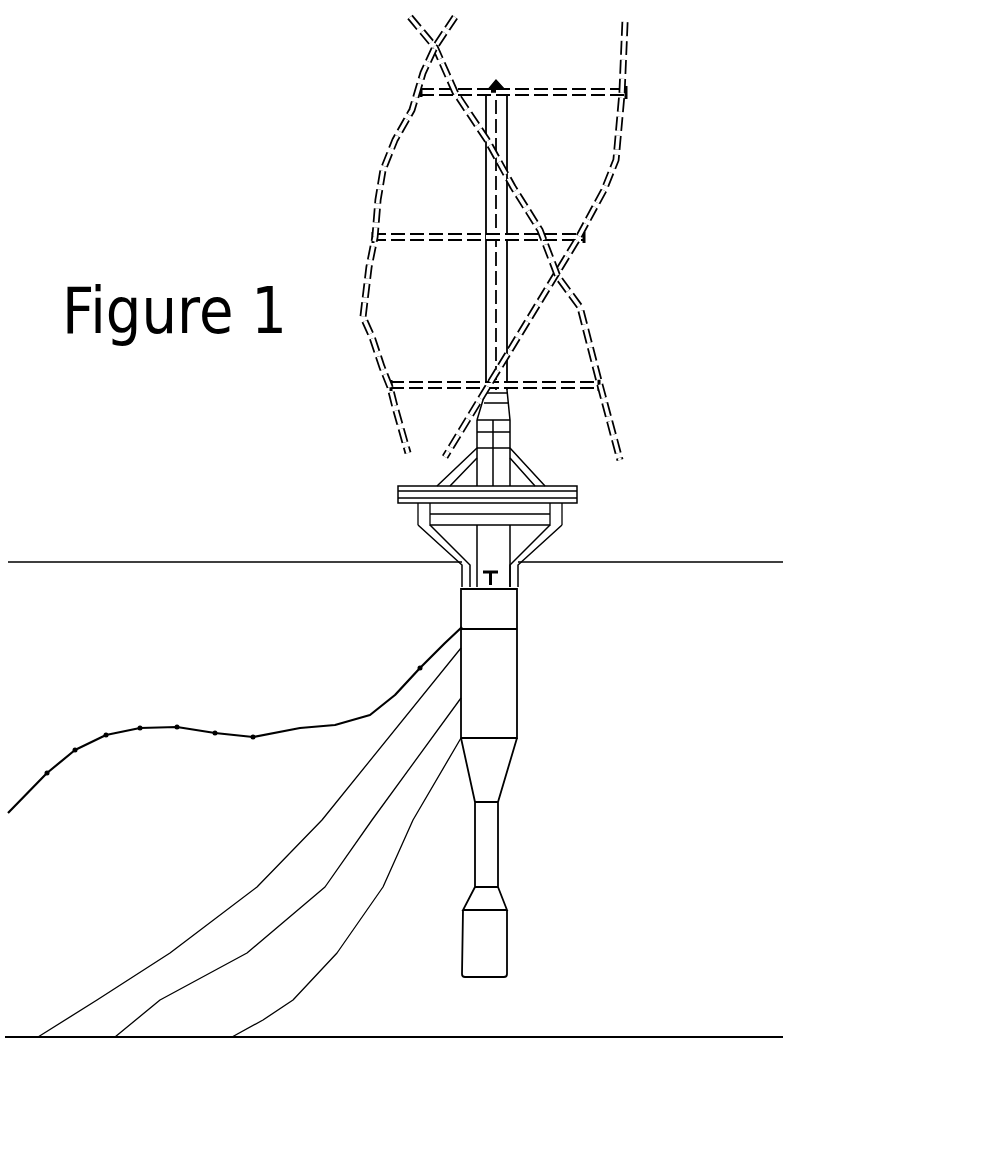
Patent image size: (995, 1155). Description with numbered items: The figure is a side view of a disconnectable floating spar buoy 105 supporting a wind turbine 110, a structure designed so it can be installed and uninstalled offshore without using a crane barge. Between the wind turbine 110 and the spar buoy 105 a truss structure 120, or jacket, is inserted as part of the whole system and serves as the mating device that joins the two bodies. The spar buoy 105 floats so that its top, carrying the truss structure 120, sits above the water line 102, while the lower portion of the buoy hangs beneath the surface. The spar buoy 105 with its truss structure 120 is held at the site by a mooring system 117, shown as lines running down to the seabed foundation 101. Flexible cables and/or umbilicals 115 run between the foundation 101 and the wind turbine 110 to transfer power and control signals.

The foundation 101 is at (676, 1020).
The water line 102 is at (395, 546).
The spar buoy 105 is at (528, 673).
The wind turbine 110 is at (588, 246).
The flexible cables and/or umbilicals 115 is at (235, 720).
The mooring system 117 is at (249, 842).
The truss structure 120 is at (582, 493).